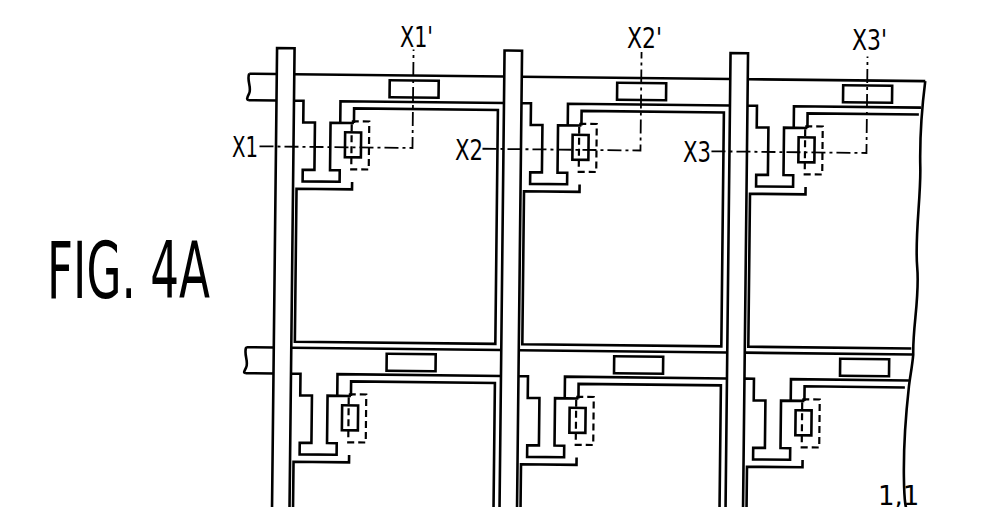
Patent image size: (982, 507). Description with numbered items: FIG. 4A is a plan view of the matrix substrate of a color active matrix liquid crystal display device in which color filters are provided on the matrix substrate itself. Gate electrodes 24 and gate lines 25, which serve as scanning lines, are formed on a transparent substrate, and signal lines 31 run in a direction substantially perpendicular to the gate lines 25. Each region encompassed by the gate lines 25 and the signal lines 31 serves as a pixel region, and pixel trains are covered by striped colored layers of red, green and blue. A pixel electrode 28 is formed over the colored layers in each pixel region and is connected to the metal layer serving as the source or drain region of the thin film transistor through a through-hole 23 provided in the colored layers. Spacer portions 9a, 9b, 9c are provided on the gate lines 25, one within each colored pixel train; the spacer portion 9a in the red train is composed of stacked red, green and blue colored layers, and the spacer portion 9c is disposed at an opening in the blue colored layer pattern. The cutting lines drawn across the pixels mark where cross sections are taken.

The signal line 31 is at (287, 50).
The gate line 25 is at (265, 82).
The gate electrode 24 is at (320, 107).
The through-hole 23 is at (353, 133).
The pixel electrode 28 is at (305, 227).
The spacer portion 9a is at (430, 80).
The spacer portion 9b is at (652, 85).
The spacer portion 9c is at (850, 88).